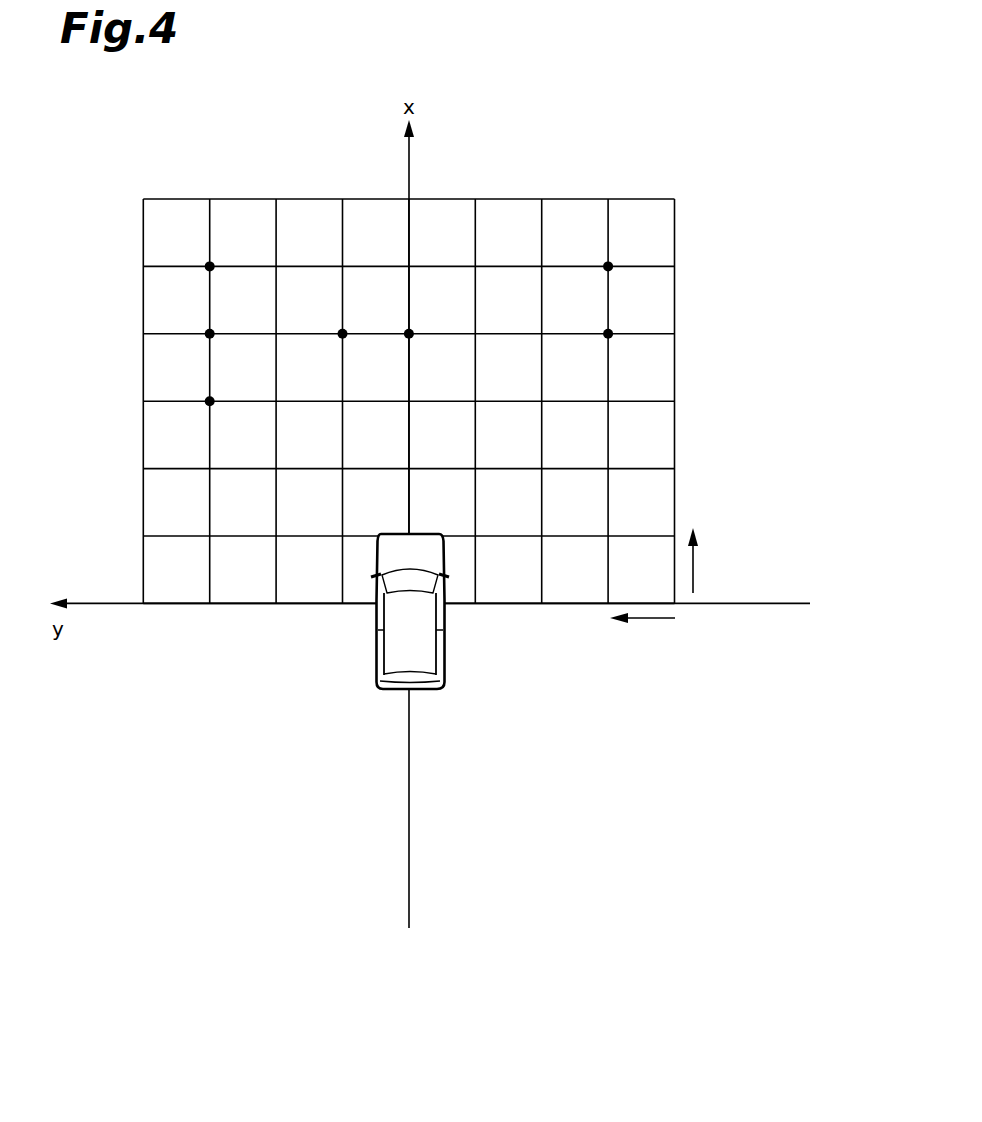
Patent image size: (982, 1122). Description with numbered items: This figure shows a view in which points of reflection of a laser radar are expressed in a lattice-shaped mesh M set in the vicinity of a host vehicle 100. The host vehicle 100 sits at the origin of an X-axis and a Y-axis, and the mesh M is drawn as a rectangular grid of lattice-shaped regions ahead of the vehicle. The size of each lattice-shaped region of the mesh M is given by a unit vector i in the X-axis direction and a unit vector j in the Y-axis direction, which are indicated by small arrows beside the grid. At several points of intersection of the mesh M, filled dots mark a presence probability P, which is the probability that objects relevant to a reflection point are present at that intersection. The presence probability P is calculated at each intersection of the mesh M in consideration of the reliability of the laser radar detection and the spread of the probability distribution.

The host vehicle 100 is at (445, 641).
The mesh M is at (572, 199).
The presence probability P is at (213, 263).
The unit vector in X-axis direction i is at (696, 560).
The unit vector in Y-axis direction j is at (652, 619).